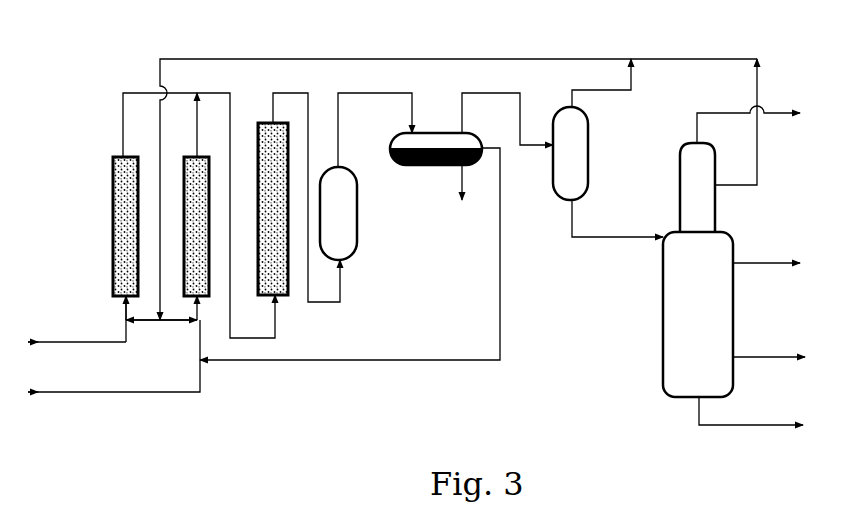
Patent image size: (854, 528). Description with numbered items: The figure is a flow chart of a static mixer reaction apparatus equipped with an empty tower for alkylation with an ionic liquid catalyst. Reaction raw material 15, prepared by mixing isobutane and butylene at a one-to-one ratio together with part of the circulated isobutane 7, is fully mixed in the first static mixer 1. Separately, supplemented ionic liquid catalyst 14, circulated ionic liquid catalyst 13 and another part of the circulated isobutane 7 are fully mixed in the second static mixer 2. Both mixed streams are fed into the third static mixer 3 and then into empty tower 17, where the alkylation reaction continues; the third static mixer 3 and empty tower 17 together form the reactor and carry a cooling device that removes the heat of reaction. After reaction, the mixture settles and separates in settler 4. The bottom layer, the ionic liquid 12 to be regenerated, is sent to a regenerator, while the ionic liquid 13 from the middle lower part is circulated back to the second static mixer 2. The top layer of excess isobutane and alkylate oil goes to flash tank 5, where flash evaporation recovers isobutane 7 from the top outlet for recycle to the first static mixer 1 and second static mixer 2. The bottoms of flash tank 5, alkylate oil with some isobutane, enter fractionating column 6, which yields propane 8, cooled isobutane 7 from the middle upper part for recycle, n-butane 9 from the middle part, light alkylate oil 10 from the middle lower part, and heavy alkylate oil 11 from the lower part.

The first static mixer 1 is at (113, 226).
The second static mixer 2 is at (187, 226).
The third static mixer 3 is at (260, 209).
The settler 4 is at (436, 134).
The flash tank 5 is at (578, 153).
The fractionating column 6 is at (685, 270).
The circulated isobutane 7 is at (458, 173).
The propane 8 is at (757, 123).
The n-butane 9 is at (774, 264).
The light alkylate oil 10 is at (784, 358).
The heavy alkylate oil 11 is at (766, 417).
The ionic liquid to be regenerated 12 is at (465, 197).
The circulated ionic liquid catalyst 13 is at (350, 254).
The supplemented ionic liquid catalyst 14 is at (114, 376).
The reaction raw material 15 is at (77, 330).
The empty tower 17 is at (359, 213).